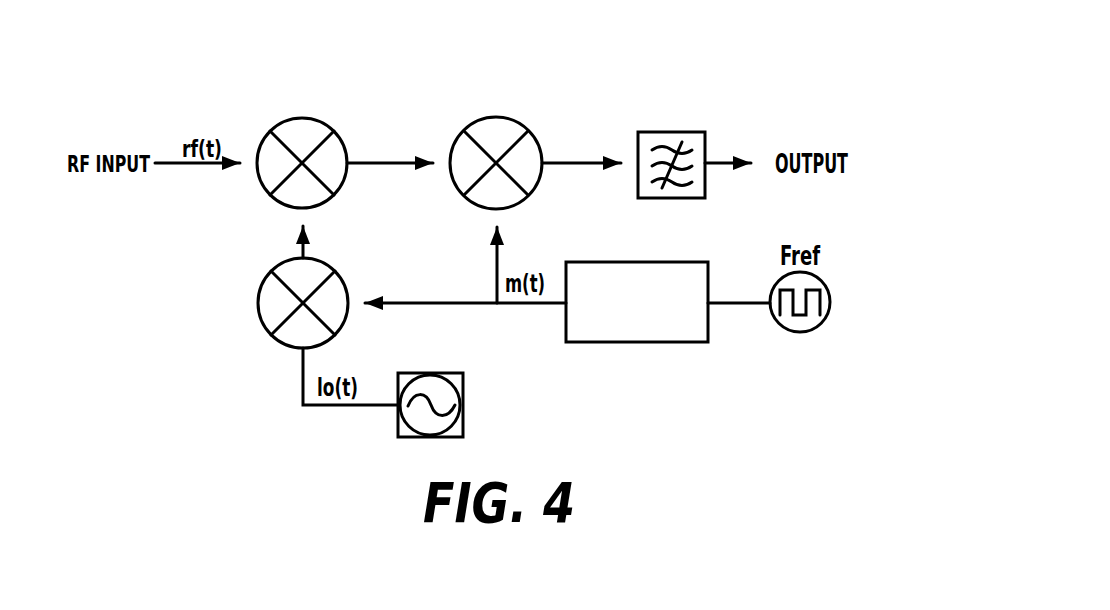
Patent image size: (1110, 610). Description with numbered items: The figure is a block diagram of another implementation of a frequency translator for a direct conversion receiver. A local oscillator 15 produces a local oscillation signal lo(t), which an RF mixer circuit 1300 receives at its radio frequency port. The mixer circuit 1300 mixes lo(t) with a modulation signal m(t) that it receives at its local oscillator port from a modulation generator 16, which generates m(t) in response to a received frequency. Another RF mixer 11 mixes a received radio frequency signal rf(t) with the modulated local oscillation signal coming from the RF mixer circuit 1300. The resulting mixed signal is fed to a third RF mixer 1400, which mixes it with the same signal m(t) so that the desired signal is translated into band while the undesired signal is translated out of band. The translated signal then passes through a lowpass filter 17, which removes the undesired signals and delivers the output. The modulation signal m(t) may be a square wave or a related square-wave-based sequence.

The RF mixer 11 is at (307, 119).
The third RF mixer 1400 is at (495, 117).
The lowpass filter 17 is at (670, 130).
The RF mixer circuit 1300 is at (258, 317).
The local oscillator 15 is at (465, 403).
The modulation generator 16 is at (635, 343).